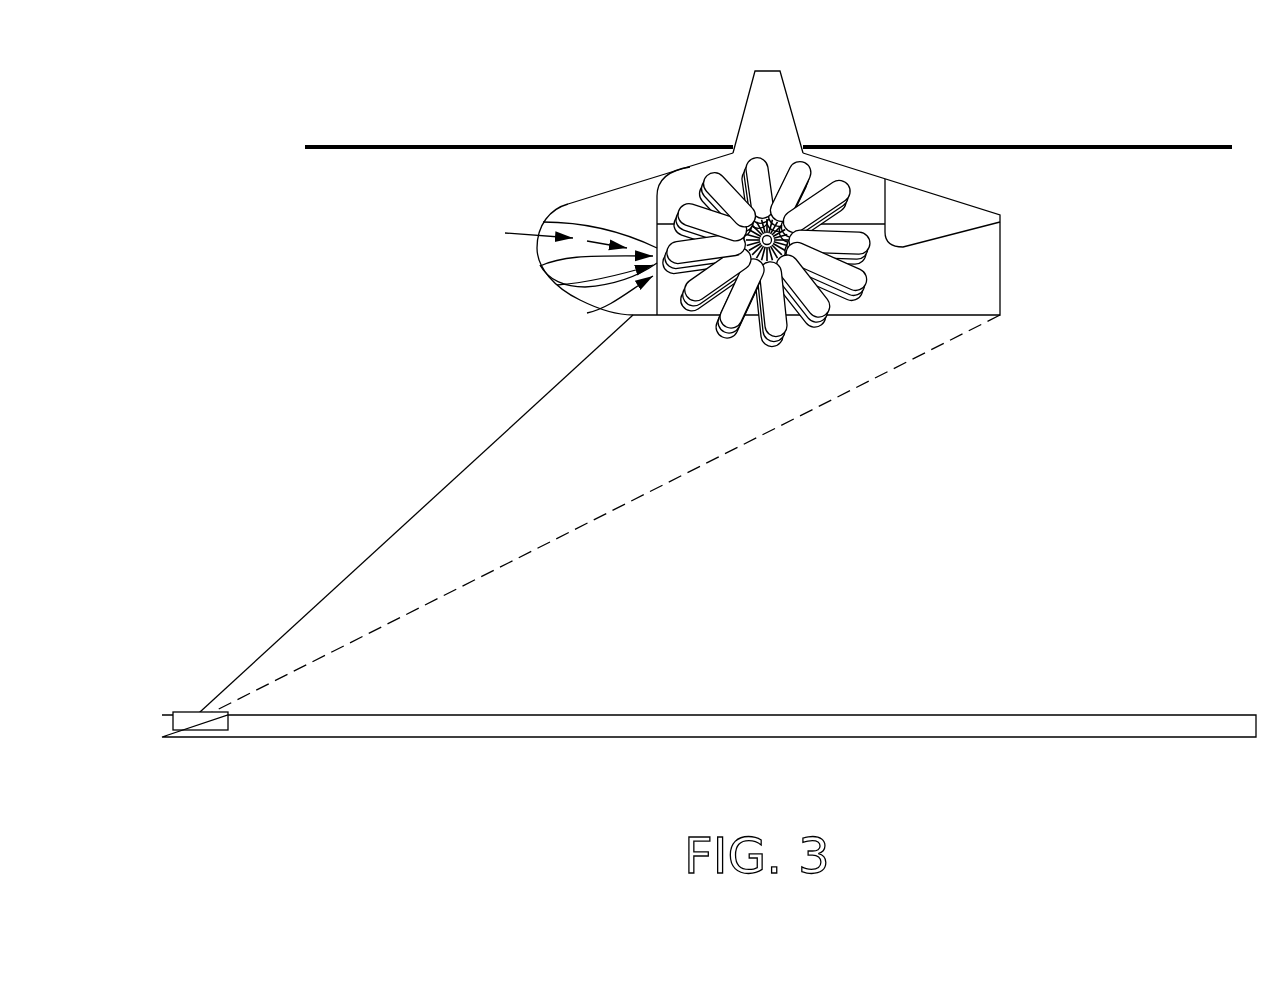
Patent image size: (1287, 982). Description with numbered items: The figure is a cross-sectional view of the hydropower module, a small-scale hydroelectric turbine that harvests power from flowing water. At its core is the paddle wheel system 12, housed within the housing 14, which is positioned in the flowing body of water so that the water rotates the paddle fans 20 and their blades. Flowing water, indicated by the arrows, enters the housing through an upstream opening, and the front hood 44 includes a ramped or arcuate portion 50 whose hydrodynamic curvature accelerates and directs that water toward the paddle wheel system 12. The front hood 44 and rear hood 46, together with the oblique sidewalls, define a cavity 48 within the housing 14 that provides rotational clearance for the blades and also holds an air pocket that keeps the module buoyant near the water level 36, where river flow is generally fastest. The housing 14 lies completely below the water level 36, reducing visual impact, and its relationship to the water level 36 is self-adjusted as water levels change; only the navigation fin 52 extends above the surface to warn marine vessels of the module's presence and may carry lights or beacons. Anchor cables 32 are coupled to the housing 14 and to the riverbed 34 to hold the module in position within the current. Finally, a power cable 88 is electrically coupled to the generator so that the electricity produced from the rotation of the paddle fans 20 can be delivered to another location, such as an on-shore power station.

The paddle wheel system 12 is at (1012, 235).
The housing 14 is at (662, 173).
The paddle fans 20 is at (540, 266).
The anchor cables 32 is at (390, 537).
The riverbed 34 is at (438, 725).
The water level 36 is at (657, 228).
The front hood 44 is at (560, 205).
The rear hood 46 is at (937, 193).
The cavity 48 is at (771, 157).
The arcuate portion 50 is at (600, 228).
The navigation fin 52 is at (745, 102).
The power cable 88 is at (300, 618).